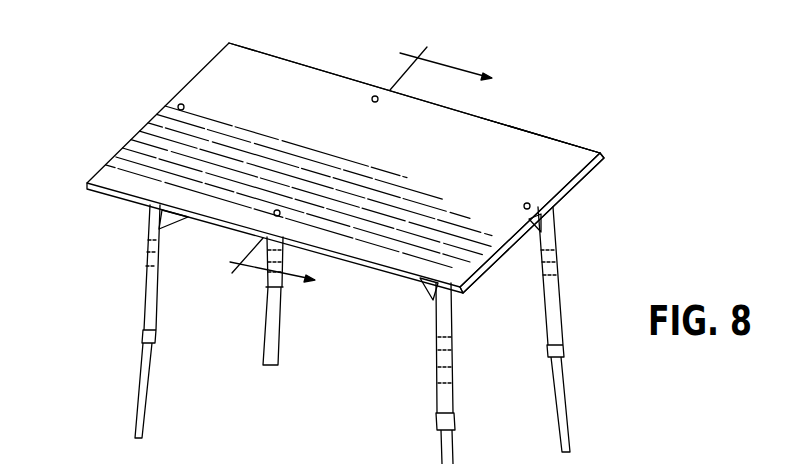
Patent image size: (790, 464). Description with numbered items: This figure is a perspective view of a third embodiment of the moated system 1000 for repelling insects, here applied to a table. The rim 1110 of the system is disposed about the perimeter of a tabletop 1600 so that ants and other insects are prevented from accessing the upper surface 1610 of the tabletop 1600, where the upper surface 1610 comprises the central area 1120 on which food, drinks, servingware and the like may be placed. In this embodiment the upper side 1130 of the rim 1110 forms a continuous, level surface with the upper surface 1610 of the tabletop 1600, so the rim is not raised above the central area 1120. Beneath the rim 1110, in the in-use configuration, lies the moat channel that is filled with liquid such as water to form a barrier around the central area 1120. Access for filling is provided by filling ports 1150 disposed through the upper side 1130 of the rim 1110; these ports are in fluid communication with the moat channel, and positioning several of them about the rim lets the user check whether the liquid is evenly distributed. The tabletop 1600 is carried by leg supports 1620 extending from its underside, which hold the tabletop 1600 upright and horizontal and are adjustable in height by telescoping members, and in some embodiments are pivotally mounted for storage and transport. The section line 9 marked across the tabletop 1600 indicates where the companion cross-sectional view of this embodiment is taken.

The moated system 1000 is at (402, 234).
The tabletop 1600 is at (312, 87).
The rim 1110 is at (517, 126).
The upper side of the rim 1130 is at (562, 141).
The filling port 1150 is at (181, 104).
The central area 1120 is at (198, 160).
The upper surface of the tabletop 1610 is at (565, 173).
The leg support 1620 is at (563, 387).
The section line 9- 9 is at (353, 157).